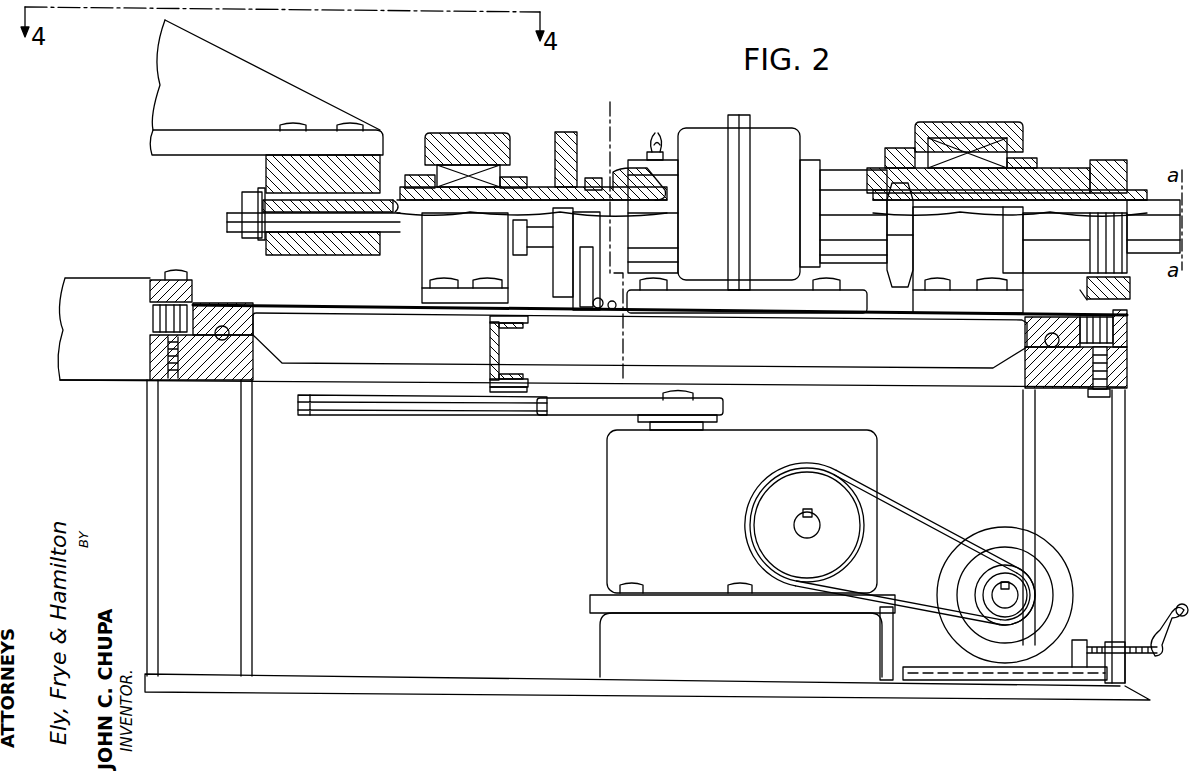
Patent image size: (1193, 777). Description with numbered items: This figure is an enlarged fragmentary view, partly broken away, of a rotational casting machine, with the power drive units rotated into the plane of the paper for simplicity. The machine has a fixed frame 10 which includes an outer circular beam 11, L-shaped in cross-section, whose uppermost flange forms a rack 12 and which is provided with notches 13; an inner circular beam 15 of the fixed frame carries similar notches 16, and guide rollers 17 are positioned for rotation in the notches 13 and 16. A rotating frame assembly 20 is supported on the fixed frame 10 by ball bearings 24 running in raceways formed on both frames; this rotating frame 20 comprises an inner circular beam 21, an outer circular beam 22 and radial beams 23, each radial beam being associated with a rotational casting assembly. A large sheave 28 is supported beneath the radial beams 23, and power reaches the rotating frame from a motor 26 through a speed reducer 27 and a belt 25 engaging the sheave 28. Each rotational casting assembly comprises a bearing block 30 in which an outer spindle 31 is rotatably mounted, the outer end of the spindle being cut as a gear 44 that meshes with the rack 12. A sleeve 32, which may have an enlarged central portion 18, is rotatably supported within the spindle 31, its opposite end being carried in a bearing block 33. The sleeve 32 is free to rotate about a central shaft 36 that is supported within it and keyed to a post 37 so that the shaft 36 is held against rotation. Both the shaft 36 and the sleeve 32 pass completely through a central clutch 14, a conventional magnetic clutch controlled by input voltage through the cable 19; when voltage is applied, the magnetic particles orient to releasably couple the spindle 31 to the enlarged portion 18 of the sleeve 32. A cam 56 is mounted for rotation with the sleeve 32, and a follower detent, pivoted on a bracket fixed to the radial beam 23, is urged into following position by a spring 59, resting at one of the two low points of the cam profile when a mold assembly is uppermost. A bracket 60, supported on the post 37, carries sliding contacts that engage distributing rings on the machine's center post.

The fixed frame 10 is at (228, 493).
The outer circular beam 11 is at (1115, 370).
The rack 12 is at (610, 102).
The notches 13 is at (1128, 312).
The central clutch 14 is at (710, 135).
The inner circular beam 15 is at (195, 372).
The notches 16 is at (150, 309).
The guide rollers 17 is at (153, 322).
The enlarged central portion 18 is at (617, 168).
The cable 19 is at (672, 120).
The rotating frame assembly 20 is at (257, 302).
The inner circular beam 21 is at (213, 302).
The outer circular beam 22 is at (1088, 292).
The radial beams 23 is at (778, 345).
The ball bearings 24 is at (228, 345).
The belt 25 is at (582, 406).
The motor 26 is at (1005, 527).
The speed reducer 27 is at (806, 441).
The large sheave 28 is at (340, 413).
The bearing block 30 is at (975, 122).
The outer spindle 31 is at (1055, 168).
The sleeve 32 is at (598, 178).
The bearing block 33 is at (475, 133).
The central shaft 36 is at (388, 200).
The post 37 is at (266, 171).
The gear 44 is at (1118, 160).
The cam 56 is at (565, 133).
The spring 59 is at (602, 310).
The brackets 60 is at (242, 76).